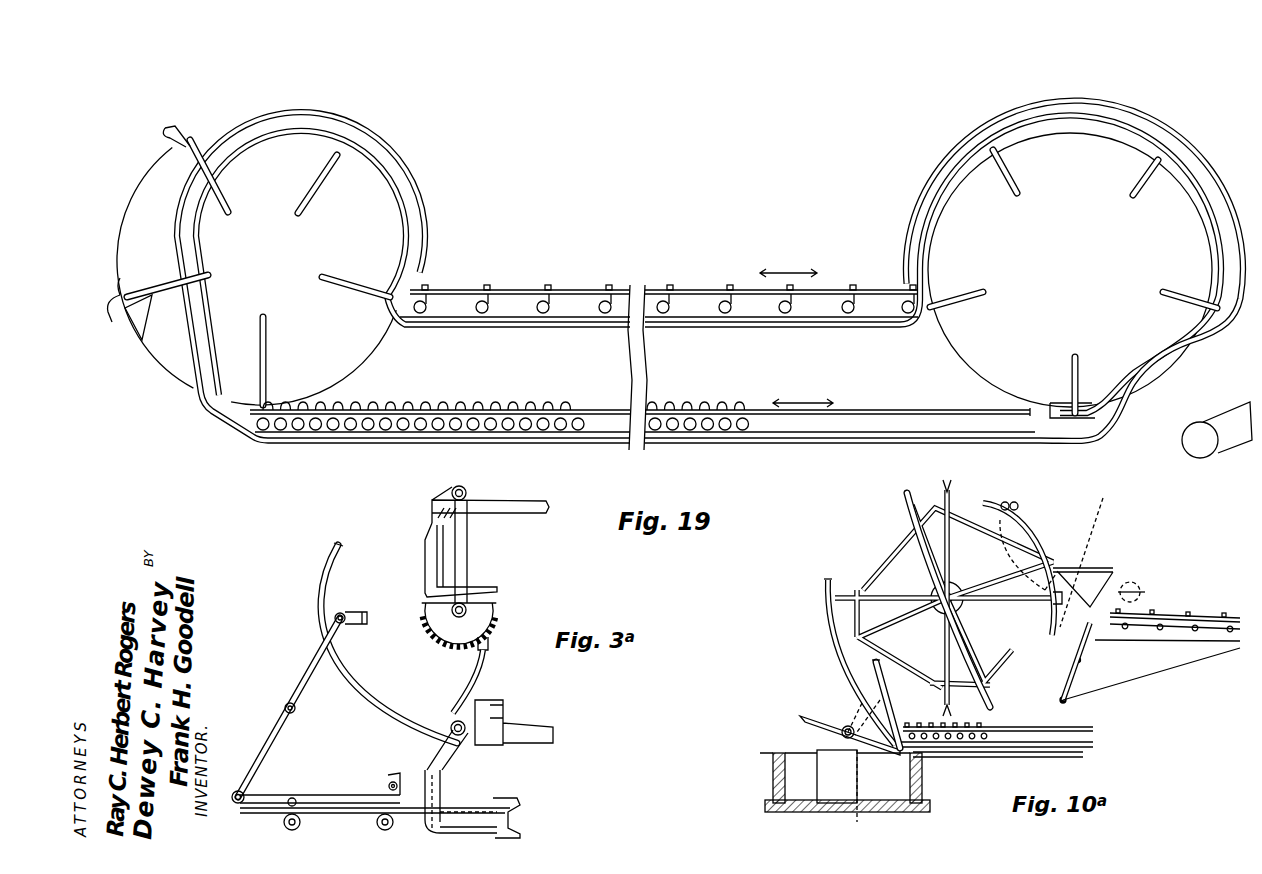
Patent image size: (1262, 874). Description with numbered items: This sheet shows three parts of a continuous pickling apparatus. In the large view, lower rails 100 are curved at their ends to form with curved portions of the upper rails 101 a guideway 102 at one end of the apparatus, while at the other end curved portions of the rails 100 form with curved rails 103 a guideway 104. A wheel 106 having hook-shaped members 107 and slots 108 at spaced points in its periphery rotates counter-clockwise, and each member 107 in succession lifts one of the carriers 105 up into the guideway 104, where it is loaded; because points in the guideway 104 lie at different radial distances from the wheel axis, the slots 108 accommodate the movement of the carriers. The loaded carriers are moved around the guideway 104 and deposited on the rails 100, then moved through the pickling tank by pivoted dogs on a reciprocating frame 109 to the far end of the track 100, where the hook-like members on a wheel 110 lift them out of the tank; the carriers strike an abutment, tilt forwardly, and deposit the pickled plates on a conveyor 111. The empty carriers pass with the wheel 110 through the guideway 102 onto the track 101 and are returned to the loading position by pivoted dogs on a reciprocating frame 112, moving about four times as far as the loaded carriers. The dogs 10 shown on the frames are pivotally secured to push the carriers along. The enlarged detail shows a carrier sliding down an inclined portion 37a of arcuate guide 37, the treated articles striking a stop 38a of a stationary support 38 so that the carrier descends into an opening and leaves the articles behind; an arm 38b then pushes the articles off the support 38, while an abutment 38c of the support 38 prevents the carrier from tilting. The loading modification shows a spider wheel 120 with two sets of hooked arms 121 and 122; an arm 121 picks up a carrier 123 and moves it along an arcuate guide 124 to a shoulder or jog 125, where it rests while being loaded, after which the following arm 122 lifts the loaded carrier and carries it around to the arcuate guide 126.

In FIG. 19, the pivoted dog 10 is at (556, 288).
In FIG. 10A, the pivoted dog 10 is at (1160, 614).
In FIG. 19, the lower rails 100 is at (797, 445).
In FIG. 19, the upper rails 101 is at (805, 330).
In FIG. 19, the guideway 102 is at (1135, 124).
In FIG. 19, the curved rails 103 is at (205, 235).
In FIG. 19, the guideway 104 is at (185, 220).
In FIG. 19, the carrier 105 is at (430, 298).
In FIG. 19, the wheel 106 is at (375, 355).
In FIG. 19, the hook-shaped member 107 is at (106, 318).
In FIG. 19, the slot 108 is at (186, 152).
In FIG. 19, the reciprocating frame 109 is at (676, 405).
In FIG. 19, the wheel 110 is at (1183, 377).
In FIG. 19, the conveyor 111 is at (1183, 442).
In FIG. 19, the reciprocating frame 112 is at (694, 290).
In FIG. 3A, the arcuate guide 37 is at (352, 680).
In FIG. 3A, the inclined portion 37a is at (468, 700).
In FIG. 3A, the stationary support 38 is at (497, 797).
In FIG. 3A, the stop 38a is at (450, 775).
In FIG. 3A, the arm 38b is at (330, 800).
In FIG. 3A, the abutment 38c is at (513, 834).
In FIG. 10A, the spider wheel 120 is at (940, 612).
In FIG. 10A, the hooked arm 121 is at (912, 502).
In FIG. 10A, the hooked arm 122 is at (952, 491).
In FIG. 10A, the carrier 123 is at (1018, 506).
In FIG. 10A, the arcuate guide 124 is at (1036, 530).
In FIG. 10A, the shoulder or jog 125 is at (1012, 503).
In FIG. 10A, the arcuate guide 126 is at (837, 633).